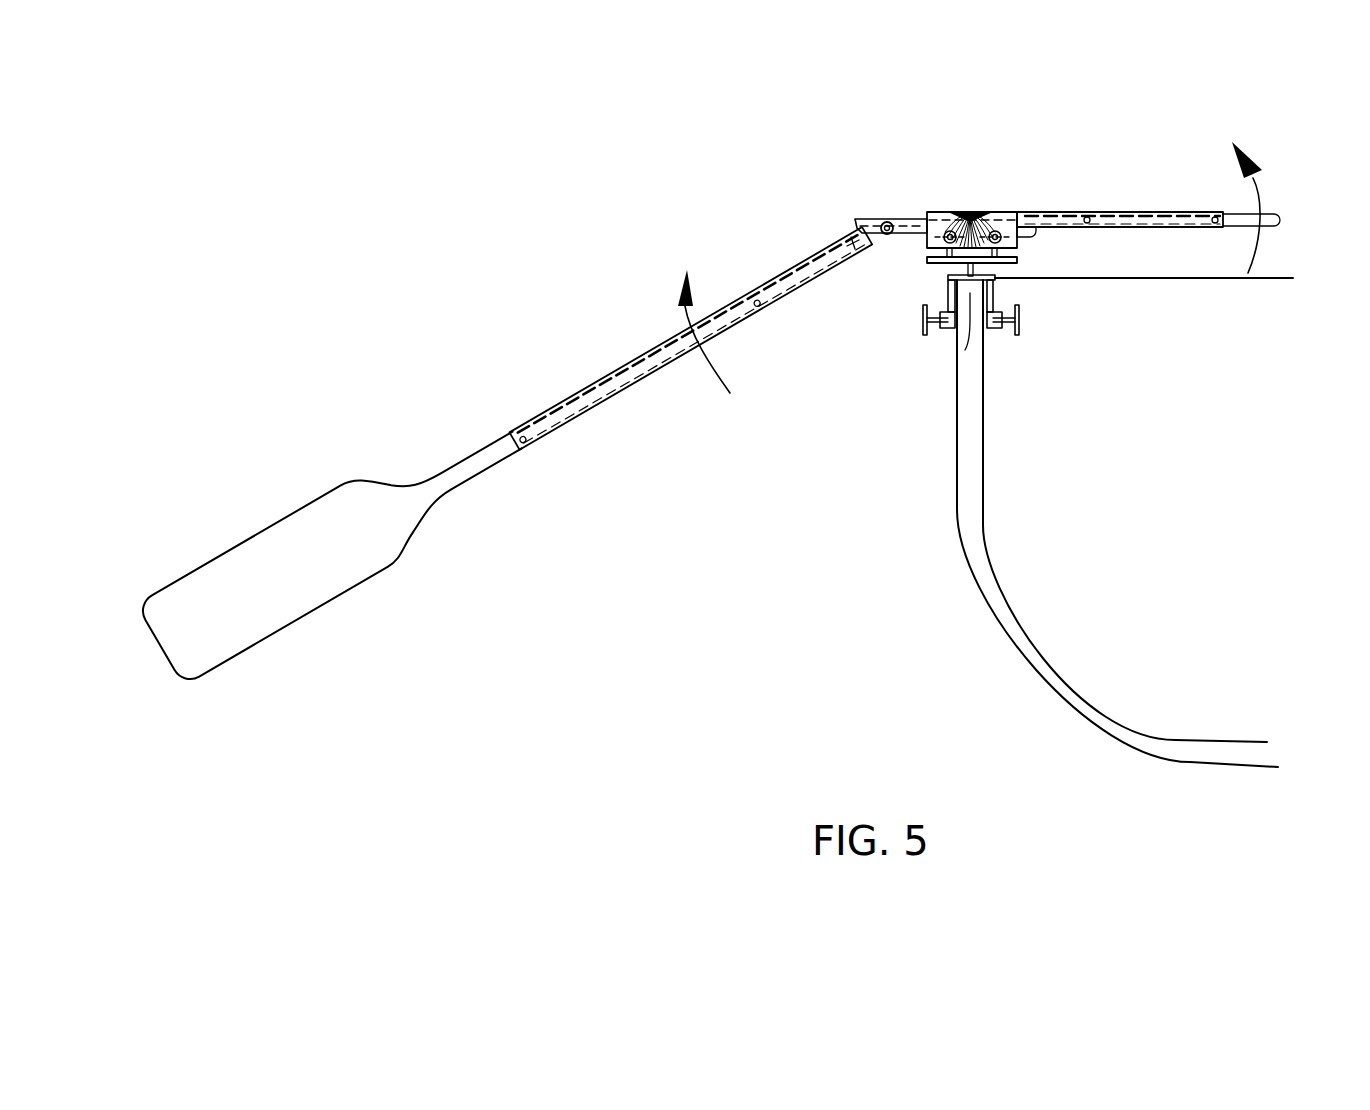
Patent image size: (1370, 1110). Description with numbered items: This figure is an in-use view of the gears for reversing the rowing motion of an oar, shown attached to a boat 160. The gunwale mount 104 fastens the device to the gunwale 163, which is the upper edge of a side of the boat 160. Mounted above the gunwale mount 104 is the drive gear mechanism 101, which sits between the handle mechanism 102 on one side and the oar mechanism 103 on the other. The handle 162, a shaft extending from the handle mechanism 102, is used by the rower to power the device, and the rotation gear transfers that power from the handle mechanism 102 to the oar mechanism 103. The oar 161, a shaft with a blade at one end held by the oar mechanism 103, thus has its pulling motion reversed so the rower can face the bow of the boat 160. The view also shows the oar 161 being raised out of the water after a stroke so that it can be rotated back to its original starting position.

The drive gear mechanism 101 is at (978, 217).
The handle mechanism 102 is at (1003, 213).
The oar mechanism 103 is at (938, 213).
The gunwale mount 104 is at (993, 292).
The boat 160 is at (983, 522).
The oar 161 is at (487, 357).
The handle 162 is at (1268, 218).
The gunwale 163 is at (965, 350).